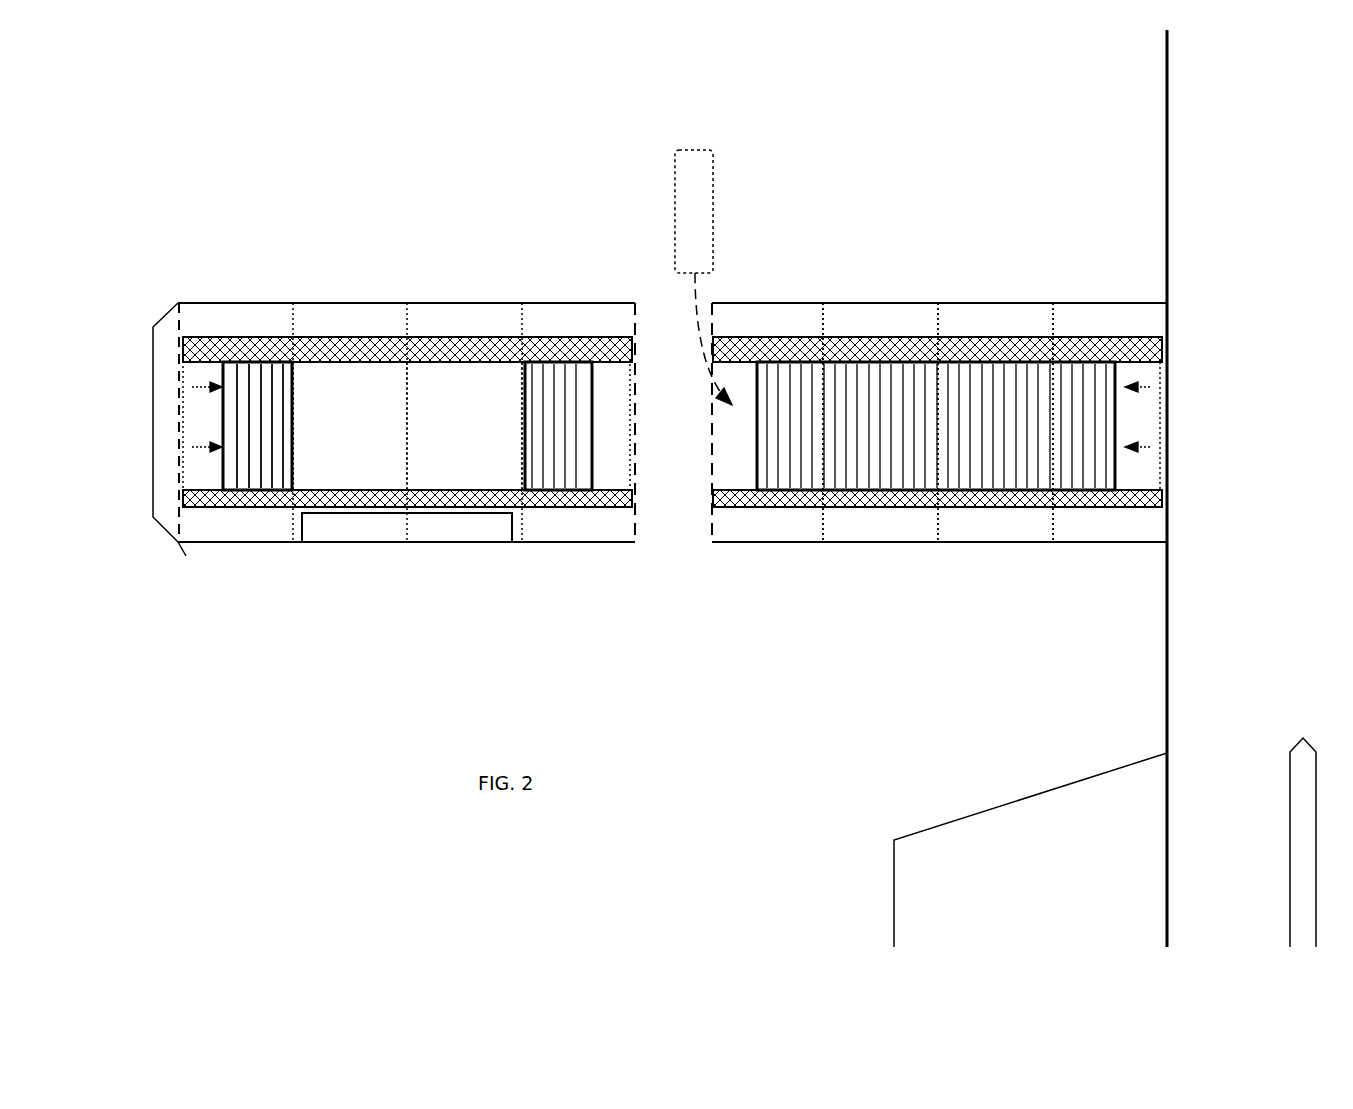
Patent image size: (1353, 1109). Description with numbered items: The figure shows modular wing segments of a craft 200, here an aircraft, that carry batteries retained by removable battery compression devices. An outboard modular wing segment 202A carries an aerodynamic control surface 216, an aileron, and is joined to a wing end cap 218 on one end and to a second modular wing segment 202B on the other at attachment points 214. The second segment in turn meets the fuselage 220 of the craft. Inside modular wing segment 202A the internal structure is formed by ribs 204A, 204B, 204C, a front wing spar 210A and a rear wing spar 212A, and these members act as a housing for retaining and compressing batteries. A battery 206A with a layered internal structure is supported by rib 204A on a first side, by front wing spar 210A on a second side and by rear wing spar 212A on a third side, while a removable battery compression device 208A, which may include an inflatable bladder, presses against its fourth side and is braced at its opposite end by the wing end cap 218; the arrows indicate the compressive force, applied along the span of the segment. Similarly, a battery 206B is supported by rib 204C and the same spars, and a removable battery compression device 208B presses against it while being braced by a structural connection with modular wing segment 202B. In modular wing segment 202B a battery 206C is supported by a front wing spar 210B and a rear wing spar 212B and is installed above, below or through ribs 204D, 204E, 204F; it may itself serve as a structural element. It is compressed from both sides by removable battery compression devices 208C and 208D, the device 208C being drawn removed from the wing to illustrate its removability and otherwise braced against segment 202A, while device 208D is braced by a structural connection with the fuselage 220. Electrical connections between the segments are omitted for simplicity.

The craft 200 is at (365, 81).
The modular wing segment 202A is at (333, 303).
The modular wing segment 202B is at (867, 303).
The rib 204A is at (292, 417).
The rib 204B is at (403, 411).
The rib 204C is at (522, 418).
The rib 204D is at (825, 532).
The rib 204E is at (940, 532).
The rib 204F is at (1053, 524).
The battery 206A is at (257, 362).
The battery 206B is at (553, 362).
The battery 206C is at (842, 383).
The removable battery compression device 208A is at (202, 362).
The removable battery compression device 208B is at (613, 376).
The removable battery compression device 208C is at (713, 213).
The removable battery compression device 208D is at (1147, 370).
The front wing spar 210A is at (425, 338).
The front wing spar 210B is at (960, 337).
The rear wing spar 212A is at (557, 505).
The rear wing spar 212B is at (812, 505).
The attachment points 214 is at (186, 556).
The aerodynamic control surface 216 is at (377, 523).
The wing end cap 218 is at (158, 308).
The fuselage 220 is at (1308, 233).